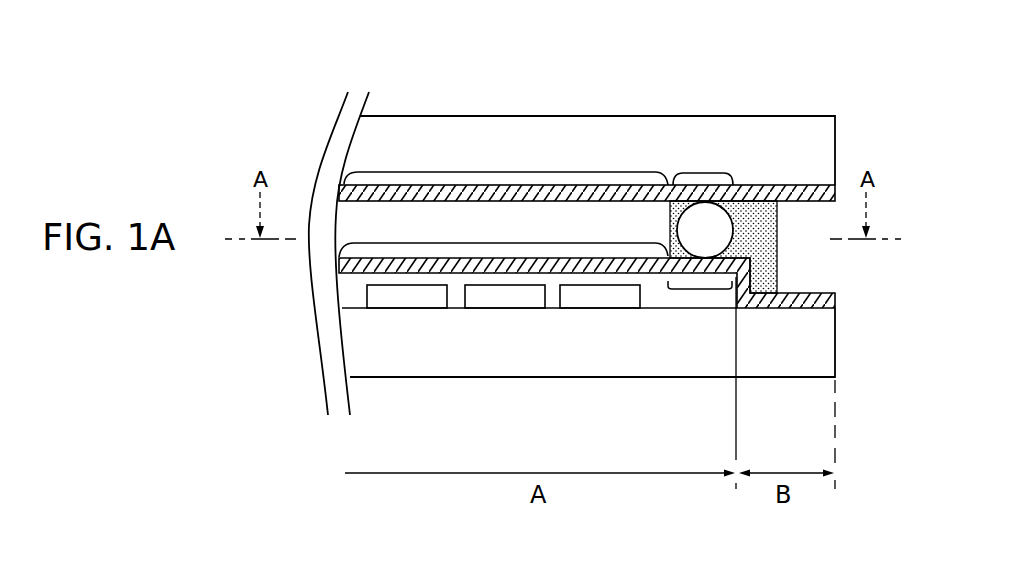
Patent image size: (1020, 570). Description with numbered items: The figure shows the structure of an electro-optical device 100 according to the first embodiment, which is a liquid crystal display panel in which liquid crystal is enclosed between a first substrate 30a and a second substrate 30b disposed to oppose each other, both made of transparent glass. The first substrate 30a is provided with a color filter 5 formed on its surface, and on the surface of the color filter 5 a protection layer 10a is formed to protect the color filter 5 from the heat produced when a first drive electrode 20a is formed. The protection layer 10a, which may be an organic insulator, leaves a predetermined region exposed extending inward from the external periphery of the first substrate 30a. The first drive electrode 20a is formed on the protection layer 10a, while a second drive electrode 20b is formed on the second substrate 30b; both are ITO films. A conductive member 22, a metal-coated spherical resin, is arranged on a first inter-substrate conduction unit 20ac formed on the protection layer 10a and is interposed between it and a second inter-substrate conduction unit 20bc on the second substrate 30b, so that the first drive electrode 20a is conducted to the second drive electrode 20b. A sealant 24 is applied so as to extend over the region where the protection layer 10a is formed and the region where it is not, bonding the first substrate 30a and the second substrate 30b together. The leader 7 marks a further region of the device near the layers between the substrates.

The electro-optical device 100 is at (330, 77).
The liquid crystal layer 7 is at (342, 220).
The second substrate 30b is at (805, 125).
The second drive electrode 20b is at (505, 171).
The second inter-substrate conduction unit 20bc is at (703, 172).
The sealant 24 is at (774, 277).
The conductive member 22 is at (694, 229).
The first drive electrode 20a is at (497, 242).
The protection layer 10a is at (723, 298).
The first substrate 30a is at (815, 347).
The first inter-substrate conduction unit 20ac is at (702, 289).
The color filter 5 is at (657, 313).